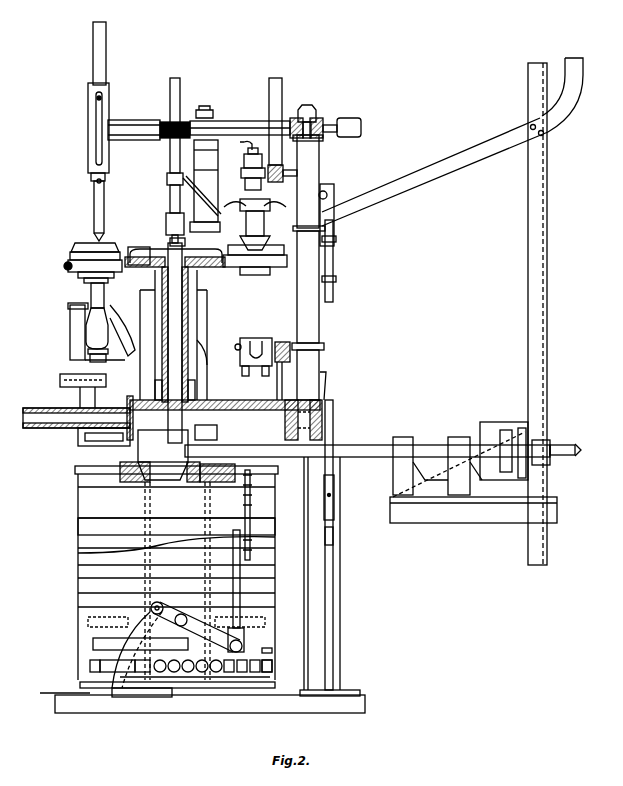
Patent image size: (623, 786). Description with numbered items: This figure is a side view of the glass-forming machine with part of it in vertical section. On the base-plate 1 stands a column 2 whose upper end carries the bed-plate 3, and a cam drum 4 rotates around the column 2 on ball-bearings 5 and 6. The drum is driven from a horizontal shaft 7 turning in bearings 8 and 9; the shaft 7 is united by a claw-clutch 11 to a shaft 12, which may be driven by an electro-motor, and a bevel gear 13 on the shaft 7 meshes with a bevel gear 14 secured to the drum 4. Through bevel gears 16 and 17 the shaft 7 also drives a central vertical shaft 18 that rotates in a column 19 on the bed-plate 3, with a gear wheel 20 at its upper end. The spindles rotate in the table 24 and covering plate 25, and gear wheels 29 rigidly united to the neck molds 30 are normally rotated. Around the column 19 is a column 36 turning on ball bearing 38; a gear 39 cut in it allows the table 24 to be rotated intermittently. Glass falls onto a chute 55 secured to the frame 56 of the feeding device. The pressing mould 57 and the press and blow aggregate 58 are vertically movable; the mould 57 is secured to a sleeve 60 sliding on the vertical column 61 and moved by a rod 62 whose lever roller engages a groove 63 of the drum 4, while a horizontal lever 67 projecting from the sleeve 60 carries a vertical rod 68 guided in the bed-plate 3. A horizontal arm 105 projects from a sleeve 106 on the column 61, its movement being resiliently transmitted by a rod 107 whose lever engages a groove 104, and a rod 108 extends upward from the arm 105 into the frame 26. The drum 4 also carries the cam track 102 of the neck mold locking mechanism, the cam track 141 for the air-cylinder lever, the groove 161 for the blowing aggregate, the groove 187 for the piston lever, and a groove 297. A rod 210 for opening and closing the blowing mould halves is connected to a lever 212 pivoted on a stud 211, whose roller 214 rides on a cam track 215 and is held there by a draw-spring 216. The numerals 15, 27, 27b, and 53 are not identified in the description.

The base-plate 1 is at (290, 712).
The column 2 is at (150, 534).
The bed-plate 3 is at (32, 408).
The cam drum 4 is at (150, 568).
The ball-bearing 5 is at (160, 478).
The ball-bearing 6 is at (137, 670).
The horizontal shaft 7 is at (345, 452).
The bearing 8 is at (403, 437).
The bearing 9 is at (458, 437).
The claw-clutch 11 is at (488, 422).
The shaft 12 is at (560, 447).
The bevel gear 13 is at (217, 435).
The bevel gear 14 is at (130, 465).
The standard 15 is at (322, 576).
The bevel gear 16 is at (187, 470).
The bevel gear 17 is at (150, 442).
The central vertical shaft 18 is at (190, 335).
The column 19 is at (190, 318).
The gear wheel 20 is at (140, 247).
The table 24 is at (125, 268).
The covering plate 25 is at (170, 247).
The frame 26 is at (316, 115).
The spindle 27 is at (188, 275).
The ring 27b is at (120, 607).
The gear wheel 29 is at (80, 275).
The neck mold 30 is at (108, 243).
The column 36 is at (216, 350).
The ball bearing 38 is at (195, 385).
The gear 39 is at (104, 370).
The rod 53 is at (255, 622).
The chute 55 is at (484, 150).
The frame 56 is at (538, 275).
The pressing mould 57 is at (258, 338).
The press and blow aggregate 58 is at (272, 246).
The sleeve 60 is at (312, 358).
The vertical column 61 is at (310, 296).
The rod 62 is at (325, 402).
The groove 63 is at (100, 527).
The horizontal lever 67 is at (283, 342).
The vertical rod 68 is at (274, 382).
The cam track 102 is at (110, 650).
The groove 104 is at (240, 468).
The horizontal arm 105 is at (270, 182).
The sleeve 106 is at (312, 167).
The rod 107 is at (334, 232).
The rod 108 is at (282, 84).
The cam track 141 is at (272, 666).
The groove 161 is at (200, 540).
The groove 187 is at (272, 652).
The rod 210 is at (304, 582).
The stud 211 is at (160, 602).
The lever 212 is at (205, 635).
The roller 214 is at (183, 614).
The cam track 215 is at (100, 630).
The draw-spring 216 is at (250, 548).
The groove 297 is at (135, 592).